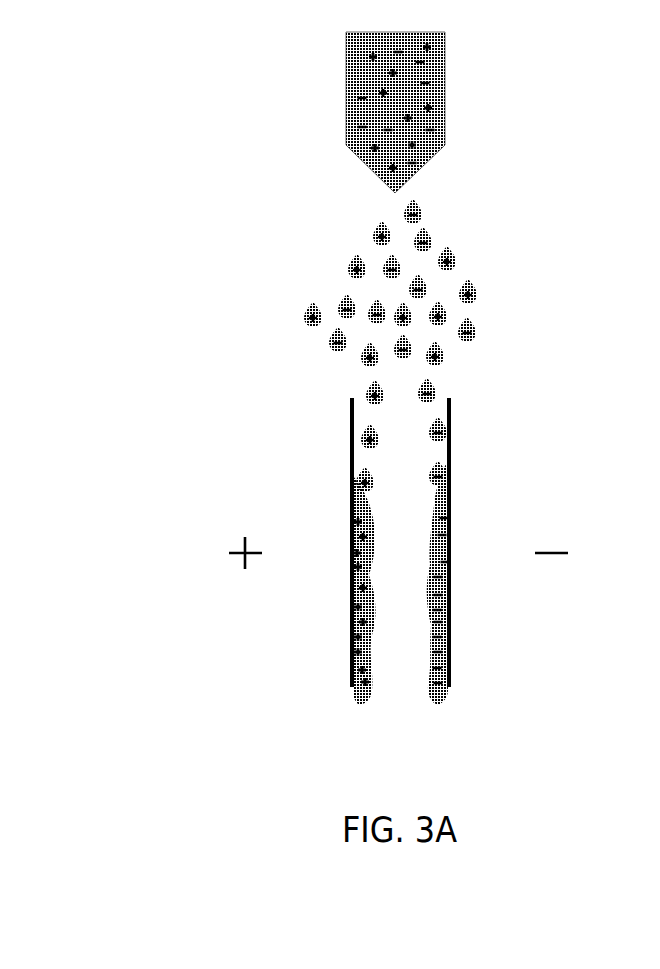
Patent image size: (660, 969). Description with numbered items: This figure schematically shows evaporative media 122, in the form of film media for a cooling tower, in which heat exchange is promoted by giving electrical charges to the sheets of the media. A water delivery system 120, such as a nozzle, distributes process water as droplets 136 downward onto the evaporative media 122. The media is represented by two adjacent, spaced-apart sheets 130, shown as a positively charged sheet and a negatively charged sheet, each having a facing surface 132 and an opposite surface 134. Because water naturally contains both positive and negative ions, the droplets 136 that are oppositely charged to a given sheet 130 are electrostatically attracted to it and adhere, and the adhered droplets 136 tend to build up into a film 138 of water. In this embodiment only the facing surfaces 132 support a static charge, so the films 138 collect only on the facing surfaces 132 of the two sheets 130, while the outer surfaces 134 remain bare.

The water delivery system 120 is at (452, 78).
The evaporative media 122 is at (165, 493).
The sheets 130 is at (396, 549).
The facing surface 132 is at (375, 679).
The second surface 134 is at (452, 435).
The droplets 136 is at (430, 240).
The film 138 is at (353, 538).